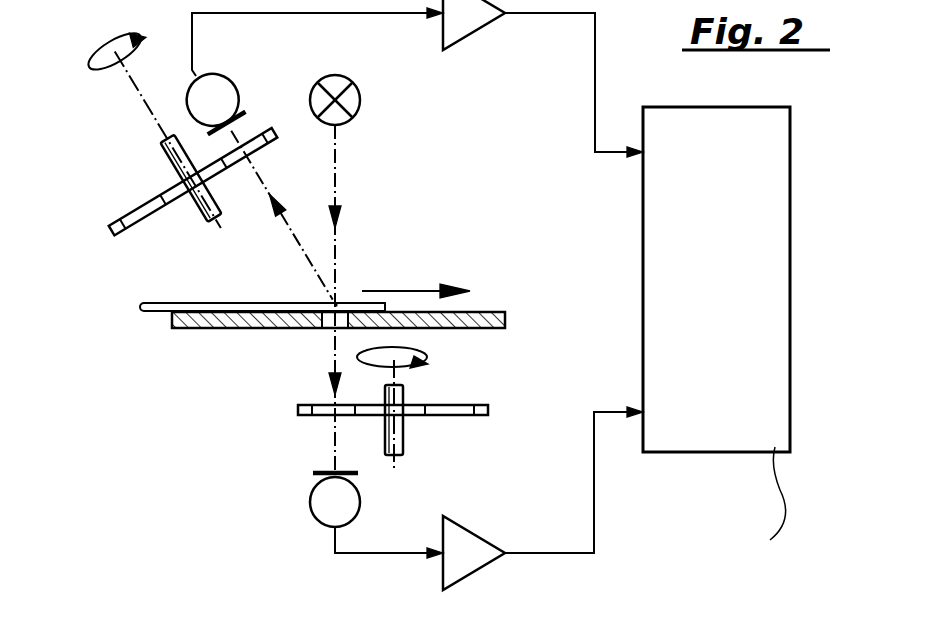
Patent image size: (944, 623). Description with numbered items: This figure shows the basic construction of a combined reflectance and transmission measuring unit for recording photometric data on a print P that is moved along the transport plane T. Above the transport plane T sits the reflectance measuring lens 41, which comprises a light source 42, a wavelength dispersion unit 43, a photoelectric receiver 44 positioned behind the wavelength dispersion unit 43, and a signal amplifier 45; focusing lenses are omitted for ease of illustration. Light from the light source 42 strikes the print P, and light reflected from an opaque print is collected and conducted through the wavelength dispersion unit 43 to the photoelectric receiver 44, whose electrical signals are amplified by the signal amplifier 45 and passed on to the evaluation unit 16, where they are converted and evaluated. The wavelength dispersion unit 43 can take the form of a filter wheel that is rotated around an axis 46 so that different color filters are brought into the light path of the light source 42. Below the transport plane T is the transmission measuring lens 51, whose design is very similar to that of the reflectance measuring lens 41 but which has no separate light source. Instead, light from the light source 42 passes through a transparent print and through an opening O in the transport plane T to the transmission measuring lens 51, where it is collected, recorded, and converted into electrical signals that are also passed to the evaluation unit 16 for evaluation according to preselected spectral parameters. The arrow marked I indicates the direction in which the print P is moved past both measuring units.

The evaluation unit 16 is at (712, 447).
The reflectance measuring lens 41 is at (128, 178).
The light source 42 is at (352, 100).
The wavelength dispersion unit 43 is at (113, 229).
The photoelectric receiver 44 is at (218, 84).
The signal amplifier 45 is at (477, 31).
The axis 46 is at (200, 206).
The transmission measuring lens 51 is at (272, 468).
The print P is at (262, 300).
The opening O is at (326, 326).
The direction of transport I is at (410, 291).
The transport plane T is at (488, 308).